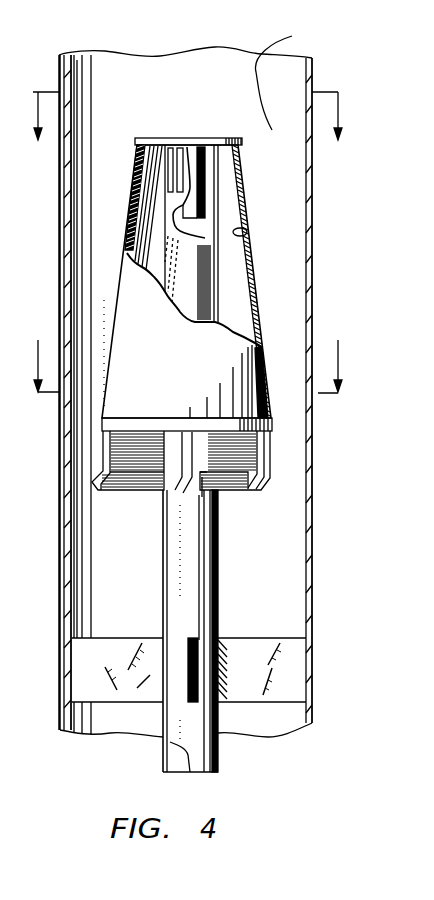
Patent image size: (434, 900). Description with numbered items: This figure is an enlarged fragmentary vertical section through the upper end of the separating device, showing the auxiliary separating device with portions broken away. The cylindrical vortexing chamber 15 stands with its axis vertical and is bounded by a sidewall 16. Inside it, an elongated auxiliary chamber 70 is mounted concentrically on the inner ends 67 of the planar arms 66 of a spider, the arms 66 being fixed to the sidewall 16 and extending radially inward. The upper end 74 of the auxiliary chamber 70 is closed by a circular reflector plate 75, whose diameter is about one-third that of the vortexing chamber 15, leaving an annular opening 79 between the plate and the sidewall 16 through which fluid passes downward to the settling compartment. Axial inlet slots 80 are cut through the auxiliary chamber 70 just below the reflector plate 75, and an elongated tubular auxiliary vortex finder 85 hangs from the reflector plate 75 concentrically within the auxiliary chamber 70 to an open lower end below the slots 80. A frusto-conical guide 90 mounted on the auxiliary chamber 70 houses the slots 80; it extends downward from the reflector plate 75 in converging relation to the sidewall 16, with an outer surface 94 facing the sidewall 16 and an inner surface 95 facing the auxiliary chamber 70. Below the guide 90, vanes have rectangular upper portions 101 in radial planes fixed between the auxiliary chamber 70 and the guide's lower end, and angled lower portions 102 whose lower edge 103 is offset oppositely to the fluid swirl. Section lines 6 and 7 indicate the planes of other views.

The vortexing chamber 15 is at (313, 83).
The sidewall 16 is at (313, 255).
The annular opening 79 is at (286, 79).
The section line 6- 6 is at (187, 133).
The section line 7- 7 is at (188, 382).
The auxiliary chamber 70 is at (199, 267).
The outer surface 94 is at (257, 290).
The inner surface 95 is at (244, 230).
The reflector plate 75 is at (230, 127).
The inlet slots 80 is at (183, 147).
The auxiliary vortex finder 85 is at (200, 175).
The upper end 74 is at (218, 153).
The frusto-conical guide 90 is at (168, 370).
The upper portion 101 is at (120, 452).
The lower portion 102 is at (233, 483).
The lower edge 103 is at (225, 493).
The inner ends 67 is at (163, 638).
The arms 66 is at (118, 665).